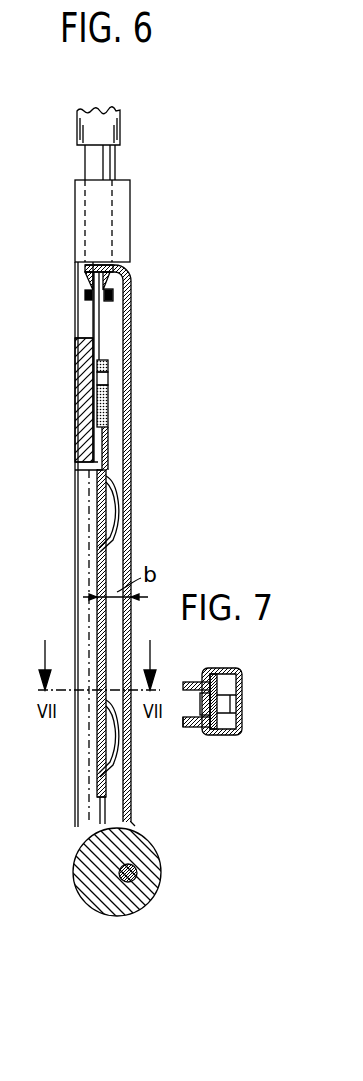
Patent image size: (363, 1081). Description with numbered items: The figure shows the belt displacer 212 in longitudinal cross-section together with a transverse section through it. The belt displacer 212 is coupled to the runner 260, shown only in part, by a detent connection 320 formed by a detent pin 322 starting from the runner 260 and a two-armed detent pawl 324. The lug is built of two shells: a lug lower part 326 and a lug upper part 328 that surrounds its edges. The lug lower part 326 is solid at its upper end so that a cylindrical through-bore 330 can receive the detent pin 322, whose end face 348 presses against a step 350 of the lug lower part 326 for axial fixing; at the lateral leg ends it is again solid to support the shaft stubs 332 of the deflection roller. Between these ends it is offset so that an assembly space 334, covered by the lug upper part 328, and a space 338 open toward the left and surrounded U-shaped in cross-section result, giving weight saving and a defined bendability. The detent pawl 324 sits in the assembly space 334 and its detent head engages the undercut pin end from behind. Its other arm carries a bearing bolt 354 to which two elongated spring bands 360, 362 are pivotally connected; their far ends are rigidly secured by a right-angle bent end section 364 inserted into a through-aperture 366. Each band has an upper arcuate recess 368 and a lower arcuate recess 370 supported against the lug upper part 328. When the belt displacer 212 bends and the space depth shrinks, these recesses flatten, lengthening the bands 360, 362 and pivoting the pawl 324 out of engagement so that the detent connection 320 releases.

In FIG. 6, the belt displacer 212 is at (148, 275).
In FIG. 6, the runner 260 is at (118, 122).
In FIG. 6, the detent pin 322 is at (110, 162).
In FIG. 6, the cylindrical through-bore 330 is at (110, 216).
In FIG. 6, the detent connection 320 is at (82, 279).
In FIG. 6, the step 350 is at (88, 295).
In FIG. 6, the end face 348 is at (110, 300).
In FIG. 6, the two-armed detent pawl 324 is at (93, 327).
In FIG. 6, the assembly space 334 is at (115, 345).
In FIG. 7, the assembly space 334 is at (231, 720).
In FIG. 6, the space 338 is at (80, 530).
In FIG. 7, the space 338 is at (192, 697).
In FIG. 6, the bearing bolt 354 is at (105, 377).
In FIG. 6, the spring band 362 is at (94, 410).
In FIG. 6, the spring band 360 is at (106, 448).
In FIG. 6, the lug upper part 328 is at (130, 482).
In FIG. 7, the lug upper part 328 is at (228, 678).
In FIG. 6, the upper arcuate recess 368 is at (121, 534).
In FIG. 6, the lower arcuate recess 370 is at (127, 783).
In FIG. 6, the through-aperture 366 is at (102, 794).
In FIG. 6, the end section 364 is at (93, 800).
In FIG. 7, the end section 364 is at (186, 722).
In FIG. 6, the shaft stubs 332 is at (137, 872).
In FIG. 7, the lug lower part 326 is at (197, 728).